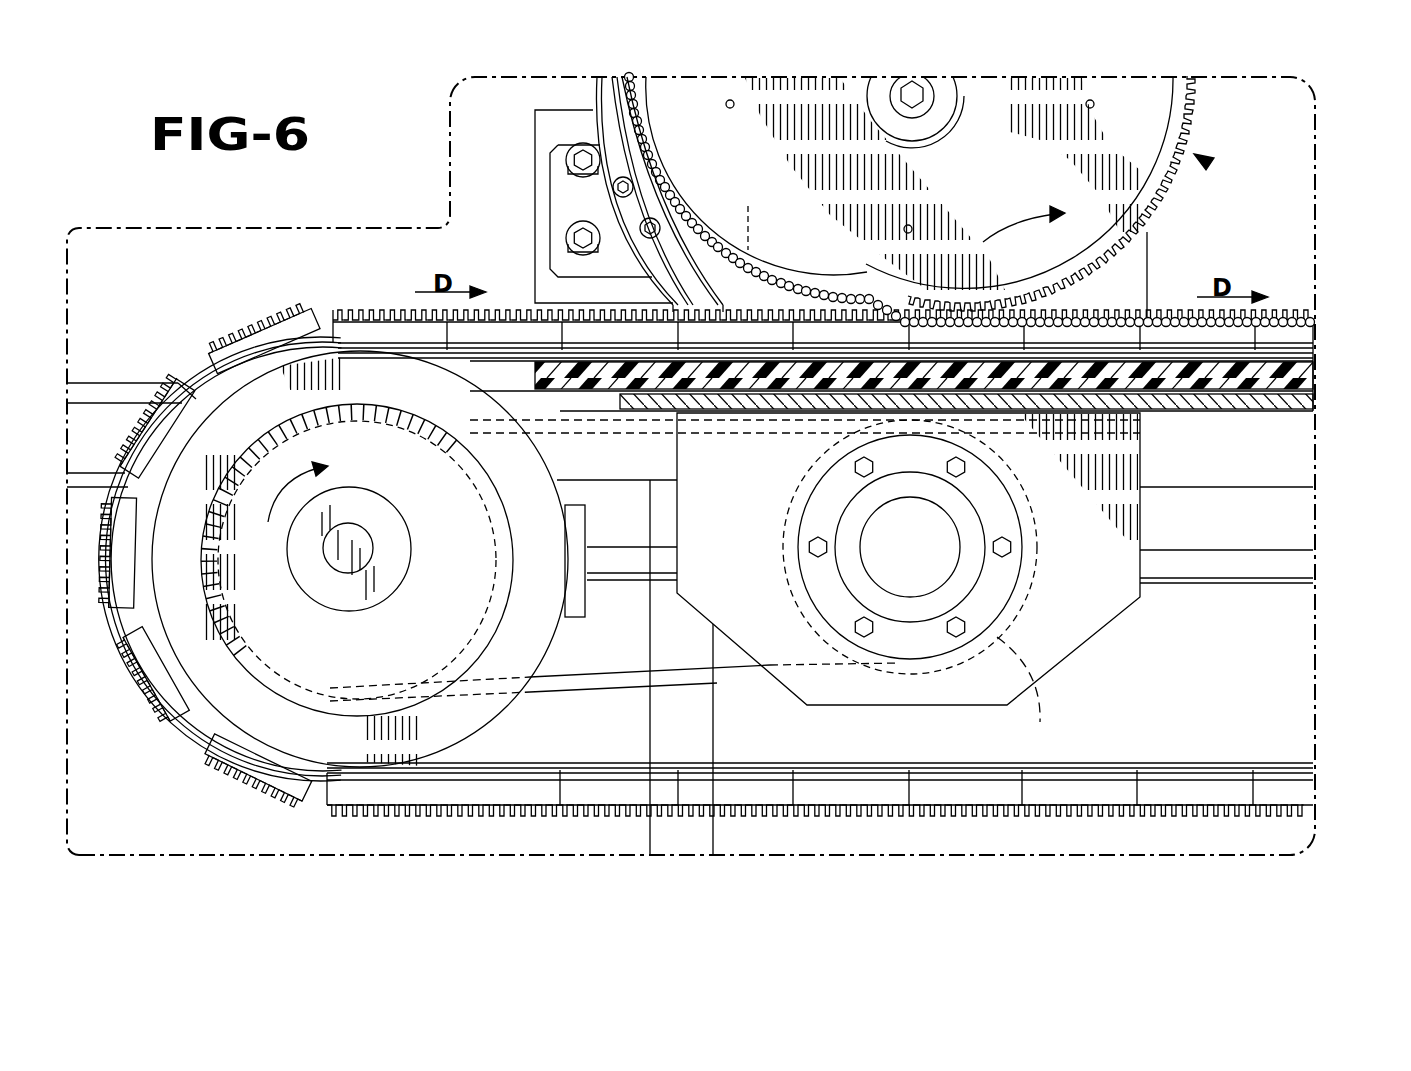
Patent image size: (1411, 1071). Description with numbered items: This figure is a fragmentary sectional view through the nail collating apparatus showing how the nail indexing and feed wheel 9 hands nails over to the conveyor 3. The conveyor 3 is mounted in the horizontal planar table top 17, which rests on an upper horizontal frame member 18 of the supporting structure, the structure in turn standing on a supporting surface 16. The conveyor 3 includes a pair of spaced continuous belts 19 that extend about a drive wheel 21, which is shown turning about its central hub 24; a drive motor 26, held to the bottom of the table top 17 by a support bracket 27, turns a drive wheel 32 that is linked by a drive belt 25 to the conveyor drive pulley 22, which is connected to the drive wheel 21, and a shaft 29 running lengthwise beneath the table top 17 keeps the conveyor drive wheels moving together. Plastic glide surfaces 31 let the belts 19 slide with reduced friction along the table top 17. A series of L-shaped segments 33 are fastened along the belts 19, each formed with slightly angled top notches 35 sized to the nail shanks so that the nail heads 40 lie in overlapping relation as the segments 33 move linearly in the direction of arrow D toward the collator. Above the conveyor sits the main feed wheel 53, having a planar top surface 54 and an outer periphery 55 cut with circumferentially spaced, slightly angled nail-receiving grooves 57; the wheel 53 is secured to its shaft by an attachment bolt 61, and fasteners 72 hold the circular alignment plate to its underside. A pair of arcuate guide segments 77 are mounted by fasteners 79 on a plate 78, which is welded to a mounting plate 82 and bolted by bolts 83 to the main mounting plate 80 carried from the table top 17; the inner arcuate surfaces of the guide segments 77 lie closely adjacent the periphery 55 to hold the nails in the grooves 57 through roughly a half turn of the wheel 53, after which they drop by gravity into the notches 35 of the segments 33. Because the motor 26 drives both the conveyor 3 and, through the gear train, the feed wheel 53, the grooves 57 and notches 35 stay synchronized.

The conveyor 3 is at (1172, 756).
The nail indexing and feed wheel 9 is at (1208, 162).
The supporting surface 16 is at (118, 383).
The table top 17 is at (1236, 425).
The upper horizontal frame member 18 is at (1283, 476).
The continuous belts 19 is at (476, 358).
The drive wheel 21 is at (540, 630).
The conveyor drive pulley 22 is at (522, 472).
The wheel axle 24 is at (360, 590).
The drive belt 25 is at (592, 692).
The drive motor 26 is at (938, 565).
The support bracket 27 is at (1060, 640).
The shaft 29 is at (625, 547).
The glide surfaces 31 is at (1200, 390).
The drive wheel 32 is at (1026, 692).
The L-shaped segments 33 is at (1300, 345).
The notches 35 is at (292, 316).
The nail heads 40 is at (792, 298).
The main feed wheel 53 is at (688, 112).
The top surface 54 is at (806, 103).
The outer periphery 55 is at (1174, 110).
The nail-receiving grooves 57 is at (948, 300).
The attachment bolt 61 is at (912, 80).
The fasteners 72 is at (730, 100).
The arcuate guide segments 77 is at (675, 247).
The plate 78 is at (620, 82).
The fasteners 79 is at (648, 228).
The main mounting plate 80 is at (553, 130).
The mounting plate 82 is at (552, 230).
The bolts 83 is at (583, 160).